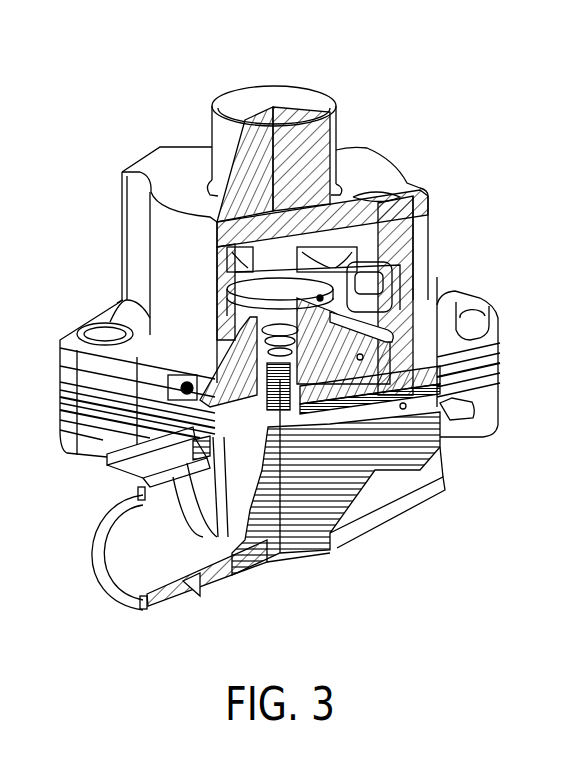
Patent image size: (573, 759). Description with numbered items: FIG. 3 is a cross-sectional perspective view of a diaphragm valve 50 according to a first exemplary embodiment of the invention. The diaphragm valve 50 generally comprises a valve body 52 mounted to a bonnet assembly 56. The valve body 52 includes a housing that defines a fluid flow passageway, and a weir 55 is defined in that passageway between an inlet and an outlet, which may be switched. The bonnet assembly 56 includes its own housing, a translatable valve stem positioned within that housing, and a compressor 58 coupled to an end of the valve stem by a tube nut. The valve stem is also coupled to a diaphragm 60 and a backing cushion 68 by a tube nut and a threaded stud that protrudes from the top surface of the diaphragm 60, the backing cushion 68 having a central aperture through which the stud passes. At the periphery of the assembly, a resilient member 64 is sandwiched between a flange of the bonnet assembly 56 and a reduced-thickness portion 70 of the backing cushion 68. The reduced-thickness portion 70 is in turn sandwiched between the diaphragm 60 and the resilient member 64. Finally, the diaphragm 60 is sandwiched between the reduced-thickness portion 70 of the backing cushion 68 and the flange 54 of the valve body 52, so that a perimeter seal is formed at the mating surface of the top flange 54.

The diaphragm valve 50 is at (103, 66).
The valve body 52 is at (366, 449).
The flange 54 is at (70, 436).
The weir 55 is at (263, 517).
The bonnet assembly 56 is at (370, 350).
The compressor 58 is at (340, 378).
The diaphragm 60 is at (413, 400).
The resilient member 64 is at (400, 378).
The backing cushion 68 is at (404, 410).
The reduced-thickness portion 70 is at (475, 370).